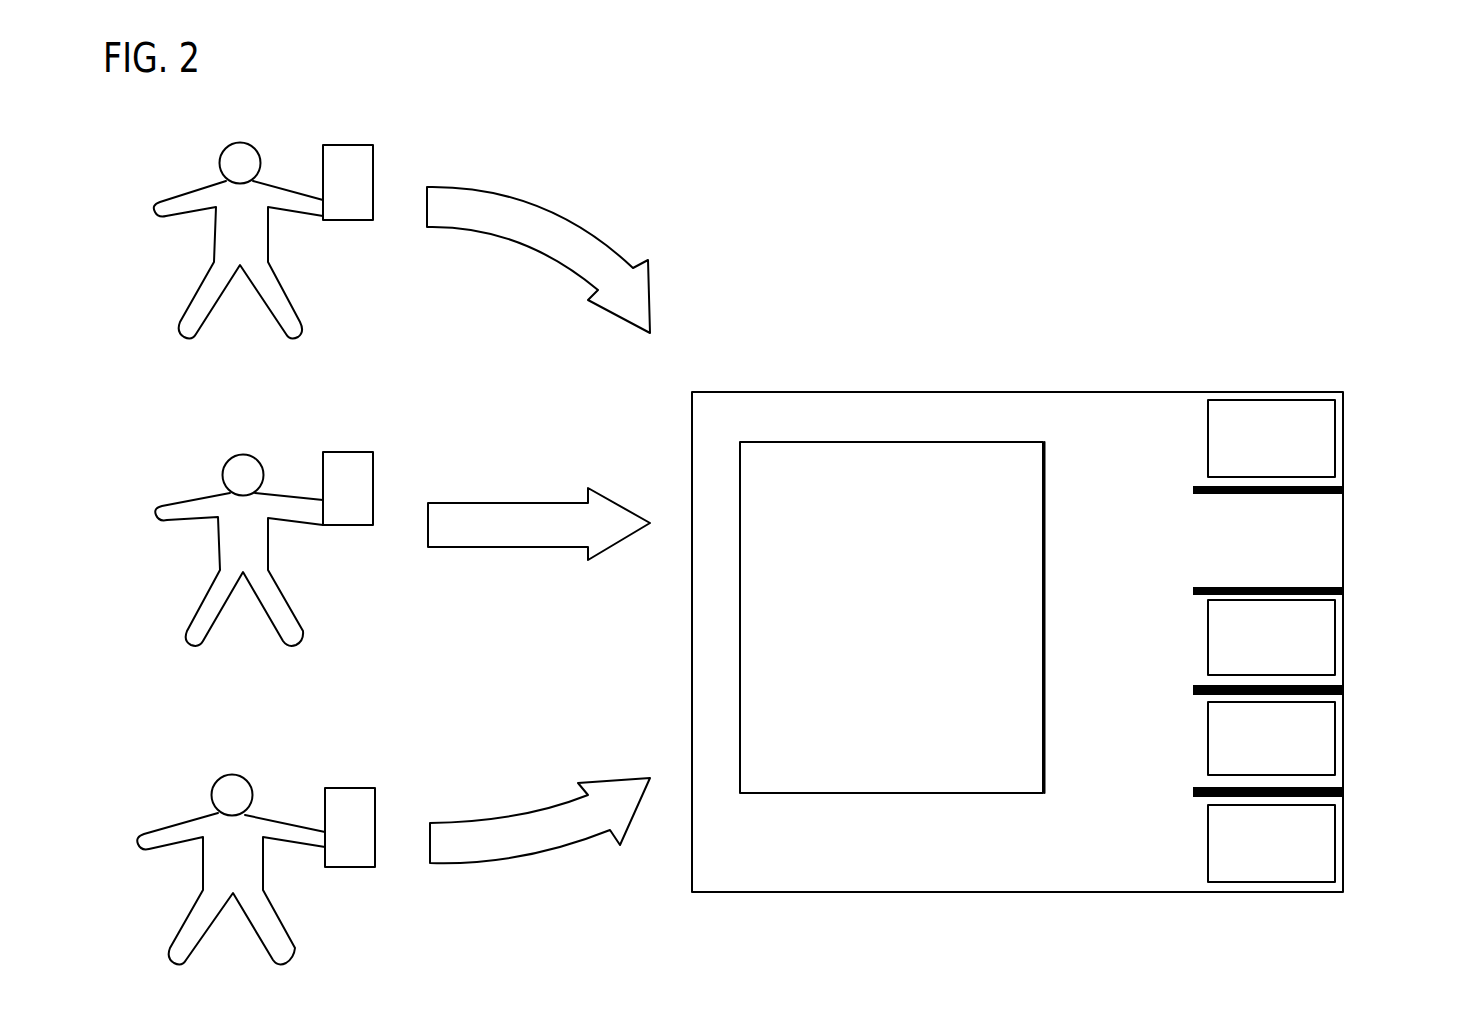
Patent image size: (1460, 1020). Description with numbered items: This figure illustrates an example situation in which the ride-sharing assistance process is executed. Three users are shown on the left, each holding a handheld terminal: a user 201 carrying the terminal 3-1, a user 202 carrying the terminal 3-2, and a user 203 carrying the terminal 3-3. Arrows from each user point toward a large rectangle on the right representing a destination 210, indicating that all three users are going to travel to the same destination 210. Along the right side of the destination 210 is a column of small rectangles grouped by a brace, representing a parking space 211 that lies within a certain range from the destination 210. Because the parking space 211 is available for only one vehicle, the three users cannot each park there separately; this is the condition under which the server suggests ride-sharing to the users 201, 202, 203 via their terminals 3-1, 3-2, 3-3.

The user 201 is at (275, 182).
The user 202 is at (275, 490).
The user 203 is at (262, 810).
The terminal 3-1 is at (350, 222).
The terminal 3-2 is at (349, 527).
The terminal 3-3 is at (350, 867).
The destination 210 is at (1092, 893).
The parking space 211 is at (1350, 392).